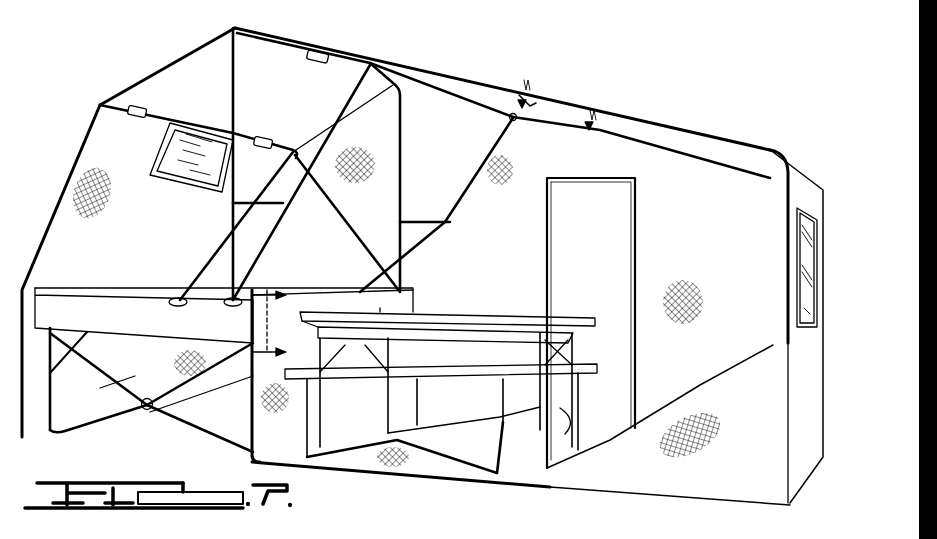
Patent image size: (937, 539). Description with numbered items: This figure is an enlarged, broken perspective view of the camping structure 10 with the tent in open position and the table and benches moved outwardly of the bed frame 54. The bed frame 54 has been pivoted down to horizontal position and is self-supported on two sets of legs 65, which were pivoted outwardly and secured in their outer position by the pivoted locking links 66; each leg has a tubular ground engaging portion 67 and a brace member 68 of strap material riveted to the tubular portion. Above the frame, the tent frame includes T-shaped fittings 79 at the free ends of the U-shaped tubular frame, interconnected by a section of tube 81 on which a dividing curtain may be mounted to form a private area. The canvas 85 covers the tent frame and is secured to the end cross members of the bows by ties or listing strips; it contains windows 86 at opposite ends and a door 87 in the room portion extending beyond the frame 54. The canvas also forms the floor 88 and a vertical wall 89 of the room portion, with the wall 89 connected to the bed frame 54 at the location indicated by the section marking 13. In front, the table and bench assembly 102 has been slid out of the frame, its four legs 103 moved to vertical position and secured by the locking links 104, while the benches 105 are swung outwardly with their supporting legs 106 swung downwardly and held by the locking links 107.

The shelter frame 10 is at (522, 97).
The section line 13 is at (278, 311).
The bed frame 54 is at (140, 324).
The legs 65 is at (175, 421).
The pivoted locking links 66 is at (78, 346).
The ground engaging portion 67 is at (103, 422).
The brace member 68 is at (128, 386).
The T-shaped fittings 79 is at (542, 122).
The section of tube 81 is at (632, 118).
The canvas 85 is at (352, 56).
The windows 86 is at (180, 158).
The door 87 is at (620, 222).
The floor 88 is at (431, 466).
The vertical wall 89 is at (270, 420).
The table and bench assembly 102 is at (466, 318).
The legs 103 is at (395, 410).
The locking links 104 is at (446, 356).
The benches 105 is at (582, 357).
The supporting legs 106 is at (496, 470).
The locking links 107 is at (546, 410).